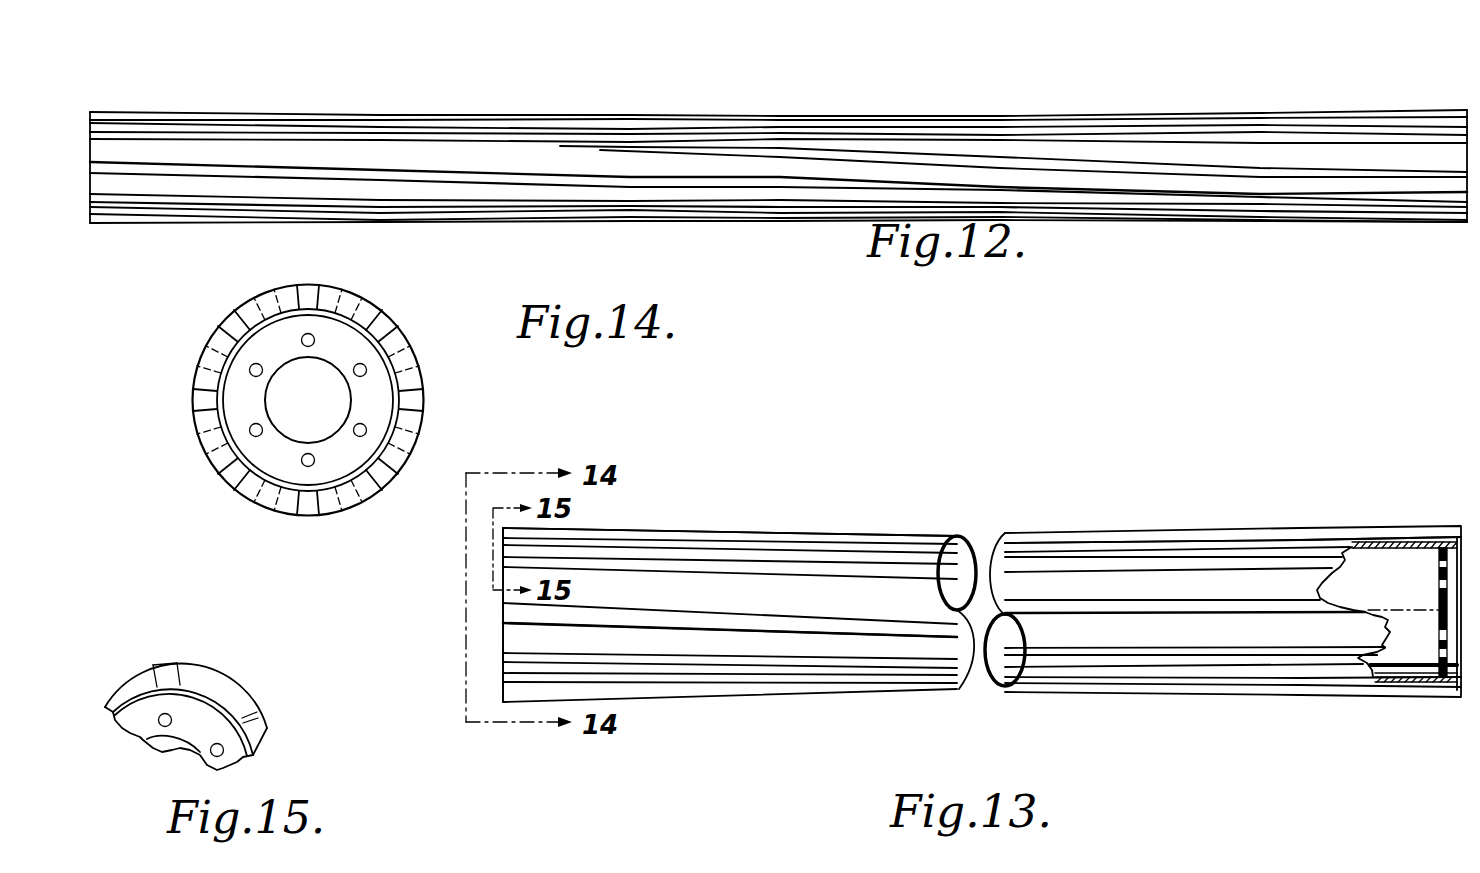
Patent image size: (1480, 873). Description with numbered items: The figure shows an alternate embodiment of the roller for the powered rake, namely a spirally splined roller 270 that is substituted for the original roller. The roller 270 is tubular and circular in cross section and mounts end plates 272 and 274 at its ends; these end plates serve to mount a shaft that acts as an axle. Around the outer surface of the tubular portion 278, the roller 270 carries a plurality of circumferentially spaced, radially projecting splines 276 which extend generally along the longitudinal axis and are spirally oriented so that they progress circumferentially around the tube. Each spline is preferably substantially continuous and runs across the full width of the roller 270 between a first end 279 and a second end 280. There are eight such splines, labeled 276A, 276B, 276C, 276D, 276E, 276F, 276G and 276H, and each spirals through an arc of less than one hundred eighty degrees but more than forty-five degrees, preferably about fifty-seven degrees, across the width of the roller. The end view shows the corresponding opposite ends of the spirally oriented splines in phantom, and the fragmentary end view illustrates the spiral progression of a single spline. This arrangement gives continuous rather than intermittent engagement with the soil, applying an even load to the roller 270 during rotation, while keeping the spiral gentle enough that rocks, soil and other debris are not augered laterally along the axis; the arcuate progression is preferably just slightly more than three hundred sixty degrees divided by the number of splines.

In FIG. 12, the spirally splined roller 270 is at (670, 102).
In FIG. 14, the spirally splined roller 270 is at (468, 410).
In FIG. 15, the spirally splined roller 270 is at (286, 706).
In FIG. 13, the spirally splined roller 270 is at (1065, 520).
In FIG. 13, the end plate 272 is at (1452, 567).
In FIG. 14, the end plate 274 is at (373, 388).
In FIG. 15, the end plate 274 is at (255, 752).
In FIG. 12, the splines 276 is at (690, 185).
In FIG. 14, the spline 276A is at (312, 285).
In FIG. 15, the spline 276A is at (200, 680).
In FIG. 13, the spline 276A is at (620, 528).
In FIG. 14, the spline 276B is at (388, 325).
In FIG. 14, the spline 276C is at (428, 400).
In FIG. 13, the spline 276C is at (635, 615).
In FIG. 14, the spline 276D is at (390, 483).
In FIG. 14, the spline 276E is at (304, 505).
In FIG. 14, the spline 276F is at (232, 488).
In FIG. 14, the spline 276G is at (197, 400).
In FIG. 13, the spline 276G is at (1252, 533).
In FIG. 14, the spline 276H is at (225, 316).
In FIG. 12, the tubular portion 278 is at (1452, 195).
In FIG. 14, the tubular portion 278 is at (398, 457).
In FIG. 15, the tubular portion 278 is at (118, 698).
In FIG. 13, the tubular portion 278 is at (1387, 543).
In FIG. 13, the first end 279 is at (500, 640).
In FIG. 13, the second end 280 is at (1455, 500).